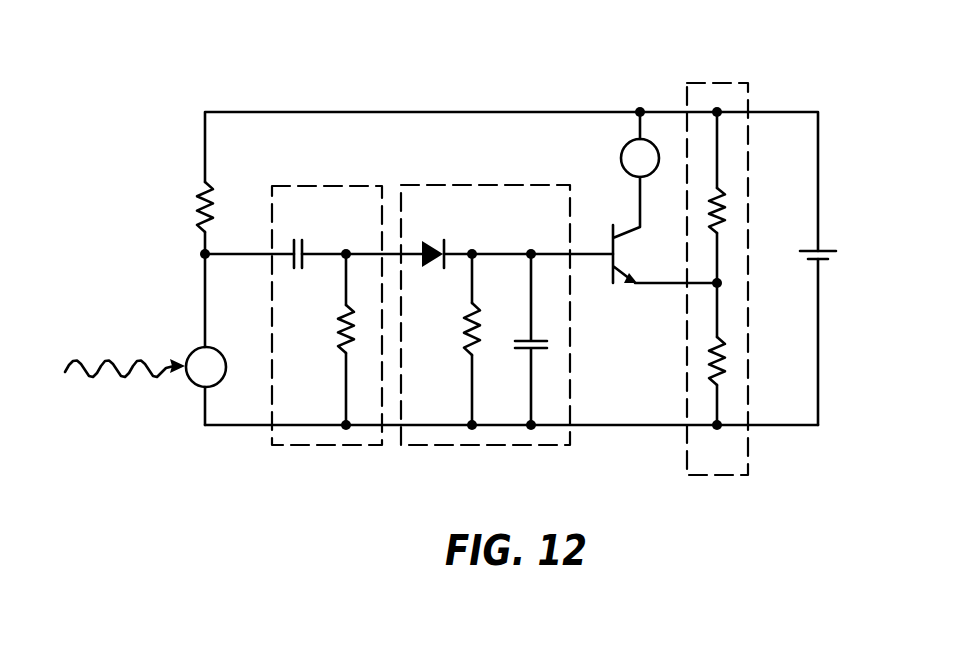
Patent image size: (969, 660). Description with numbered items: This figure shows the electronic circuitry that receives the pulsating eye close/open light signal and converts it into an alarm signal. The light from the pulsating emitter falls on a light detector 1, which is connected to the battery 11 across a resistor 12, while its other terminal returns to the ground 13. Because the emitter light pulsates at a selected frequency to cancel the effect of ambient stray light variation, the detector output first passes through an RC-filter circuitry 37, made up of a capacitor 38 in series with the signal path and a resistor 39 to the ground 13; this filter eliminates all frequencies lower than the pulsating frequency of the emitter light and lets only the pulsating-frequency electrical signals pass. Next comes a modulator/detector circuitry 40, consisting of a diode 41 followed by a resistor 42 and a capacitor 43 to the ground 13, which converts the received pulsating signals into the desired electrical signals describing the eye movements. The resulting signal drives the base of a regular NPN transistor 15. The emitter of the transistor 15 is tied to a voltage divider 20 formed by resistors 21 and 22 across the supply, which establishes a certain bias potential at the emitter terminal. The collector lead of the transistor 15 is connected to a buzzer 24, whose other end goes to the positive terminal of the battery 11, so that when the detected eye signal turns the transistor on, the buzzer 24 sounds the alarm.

The light detector 1 is at (193, 352).
The battery 11 is at (825, 250).
The resistor 12 is at (196, 203).
The ground 13 is at (616, 427).
The NPN transistor 15 is at (612, 240).
The voltage divider 20 is at (720, 83).
The resistor 21 is at (722, 202).
The resistor 22 is at (722, 350).
The buzzer 24 is at (623, 162).
The RC-filter circuitry 37 is at (327, 186).
The capacitor 38 is at (303, 246).
The resistor 39 is at (340, 326).
The modulator/detector circuitry 40 is at (487, 185).
The diode 41 is at (428, 243).
The resistor 42 is at (466, 326).
The capacitor 43 is at (525, 340).